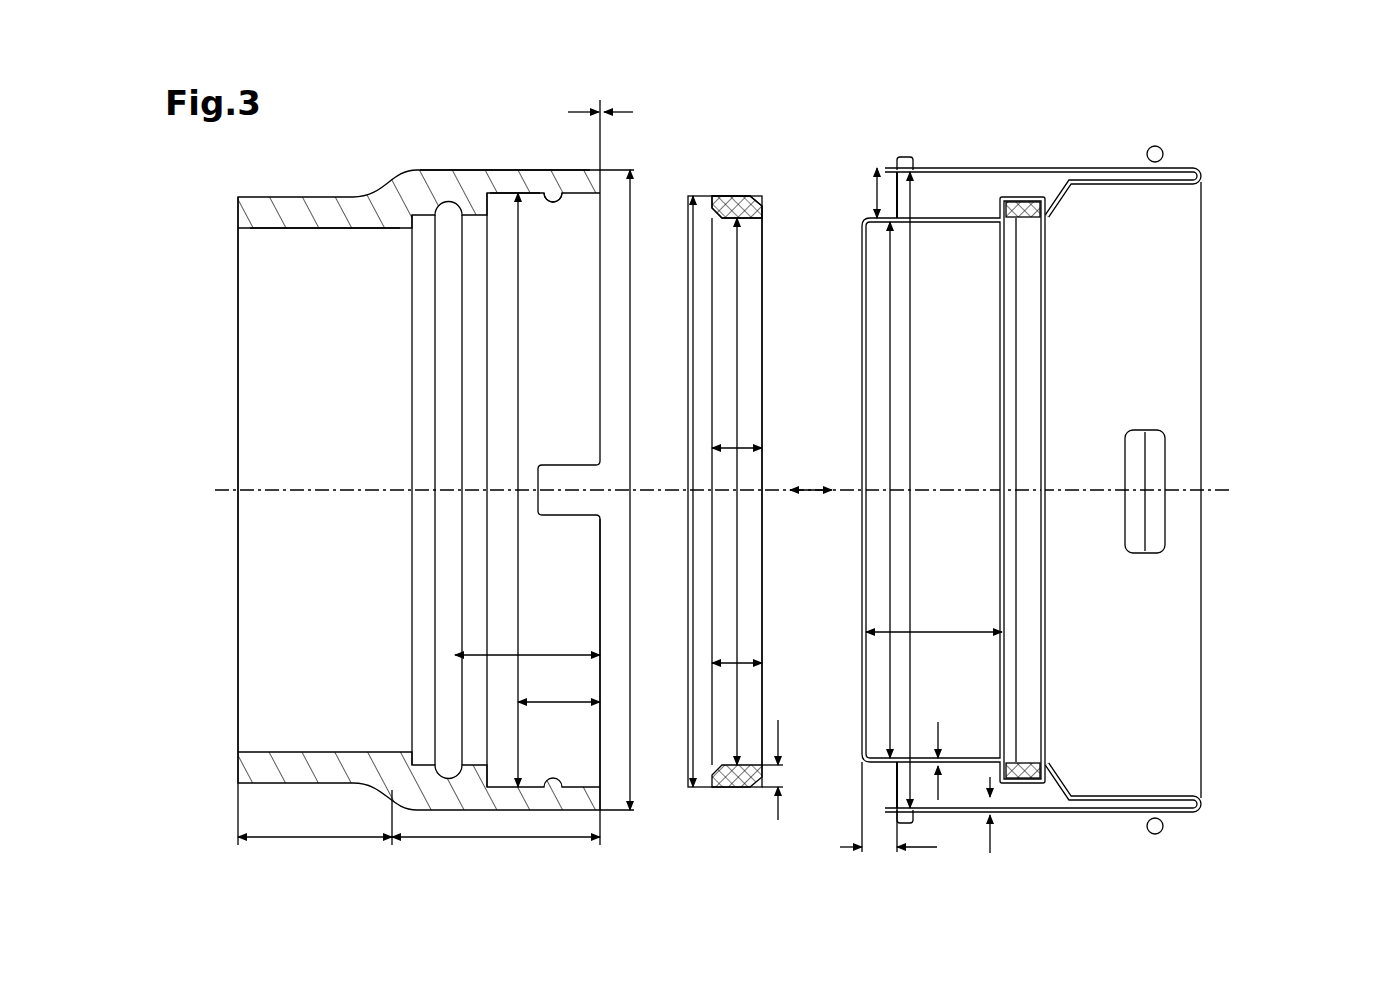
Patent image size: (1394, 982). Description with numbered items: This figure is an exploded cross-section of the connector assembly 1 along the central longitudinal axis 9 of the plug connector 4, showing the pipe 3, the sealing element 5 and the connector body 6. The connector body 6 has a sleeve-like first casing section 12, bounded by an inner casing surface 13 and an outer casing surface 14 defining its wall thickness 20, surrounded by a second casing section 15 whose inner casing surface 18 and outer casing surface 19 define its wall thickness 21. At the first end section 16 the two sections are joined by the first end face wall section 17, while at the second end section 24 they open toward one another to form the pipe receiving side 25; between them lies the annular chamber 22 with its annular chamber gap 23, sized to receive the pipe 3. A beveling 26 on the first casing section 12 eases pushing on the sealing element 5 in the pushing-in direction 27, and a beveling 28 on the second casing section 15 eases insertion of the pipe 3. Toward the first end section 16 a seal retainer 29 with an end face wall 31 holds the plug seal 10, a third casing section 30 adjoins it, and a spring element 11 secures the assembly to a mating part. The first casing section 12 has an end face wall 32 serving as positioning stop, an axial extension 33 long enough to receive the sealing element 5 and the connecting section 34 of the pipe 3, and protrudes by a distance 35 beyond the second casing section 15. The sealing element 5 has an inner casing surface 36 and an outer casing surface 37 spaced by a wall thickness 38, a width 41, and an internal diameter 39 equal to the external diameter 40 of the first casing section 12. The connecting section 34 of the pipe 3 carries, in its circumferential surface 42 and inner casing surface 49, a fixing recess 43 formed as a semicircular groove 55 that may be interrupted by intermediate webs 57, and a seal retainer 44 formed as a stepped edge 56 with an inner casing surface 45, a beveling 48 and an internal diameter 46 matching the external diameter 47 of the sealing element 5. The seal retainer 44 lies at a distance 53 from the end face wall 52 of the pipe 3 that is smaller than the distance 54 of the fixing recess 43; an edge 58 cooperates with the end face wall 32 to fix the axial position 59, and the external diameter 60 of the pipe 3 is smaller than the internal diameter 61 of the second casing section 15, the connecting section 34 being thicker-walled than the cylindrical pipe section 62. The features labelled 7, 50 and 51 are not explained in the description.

The connector assembly 1 is at (1298, 150).
The pipe 3 is at (413, 192).
The plug connector 4 is at (1248, 208).
The sealing element 5 is at (740, 195).
The connector body 6 is at (1180, 335).
The window 7 is at (1145, 491).
The central longitudinal axis 9 is at (1213, 488).
The plug seal 10 is at (1043, 242).
The spring element 11 is at (1163, 148).
The first casing section 12 is at (913, 225).
The inner casing surface 13 is at (958, 226).
The outer casing surface 14 is at (928, 218).
The second casing section 15 is at (935, 212).
The first end section 16 is at (1228, 168).
The first end face wall section 17 is at (1205, 177).
The inner casing surface 18 is at (1063, 170).
The outer casing surface 19 is at (1095, 160).
The wall thickness 20 is at (938, 740).
The wall thickness 21 is at (992, 847).
The annular chamber 22 is at (921, 193).
The annular chamber gap 23 is at (873, 200).
The second end section 24 is at (853, 143).
The pipe receiving side 25 is at (860, 217).
The beveling 26 is at (862, 230).
The pushing-in direction 27 is at (728, 448).
The beveling 28 is at (900, 157).
The seal retainer 29 is at (1070, 190).
The third casing section 30 is at (1143, 187).
The end face wall 31 is at (1048, 178).
The end face wall 32 is at (845, 842).
The axial extension 33 is at (968, 632).
The connecting section 34 is at (493, 837).
The distance 35 is at (872, 850).
The inner casing surface 36 is at (760, 223).
The outer casing surface 37 is at (727, 195).
The wall thickness 38 is at (781, 773).
The internal diameter 39 is at (740, 565).
The external diameter 40 is at (890, 380).
The width 41 is at (732, 660).
The circumferential surface 42 is at (382, 230).
The fixing recess 43 is at (447, 317).
The seal retainer 44 is at (565, 310).
The inner casing surface 45 is at (553, 203).
The internal diameter 46 is at (518, 408).
The external diameter 47 is at (687, 230).
The beveling 48 is at (605, 185).
The inner casing surface 49 is at (277, 228).
The flange outer surface 50 is at (437, 167).
The gap dimension 51 is at (805, 485).
The end face wall 52 is at (603, 775).
The distance 53 is at (550, 702).
The distance 54 is at (505, 655).
The semicircular groove 55 is at (447, 353).
The stepped edge 56 is at (562, 218).
The intermediate webs 57 is at (440, 553).
The edge 58 is at (415, 213).
The axial position 59 is at (595, 108).
The external diameter 60 is at (632, 706).
The internal diameter 61 is at (910, 540).
The cylindrical pipe section 62 is at (357, 840).